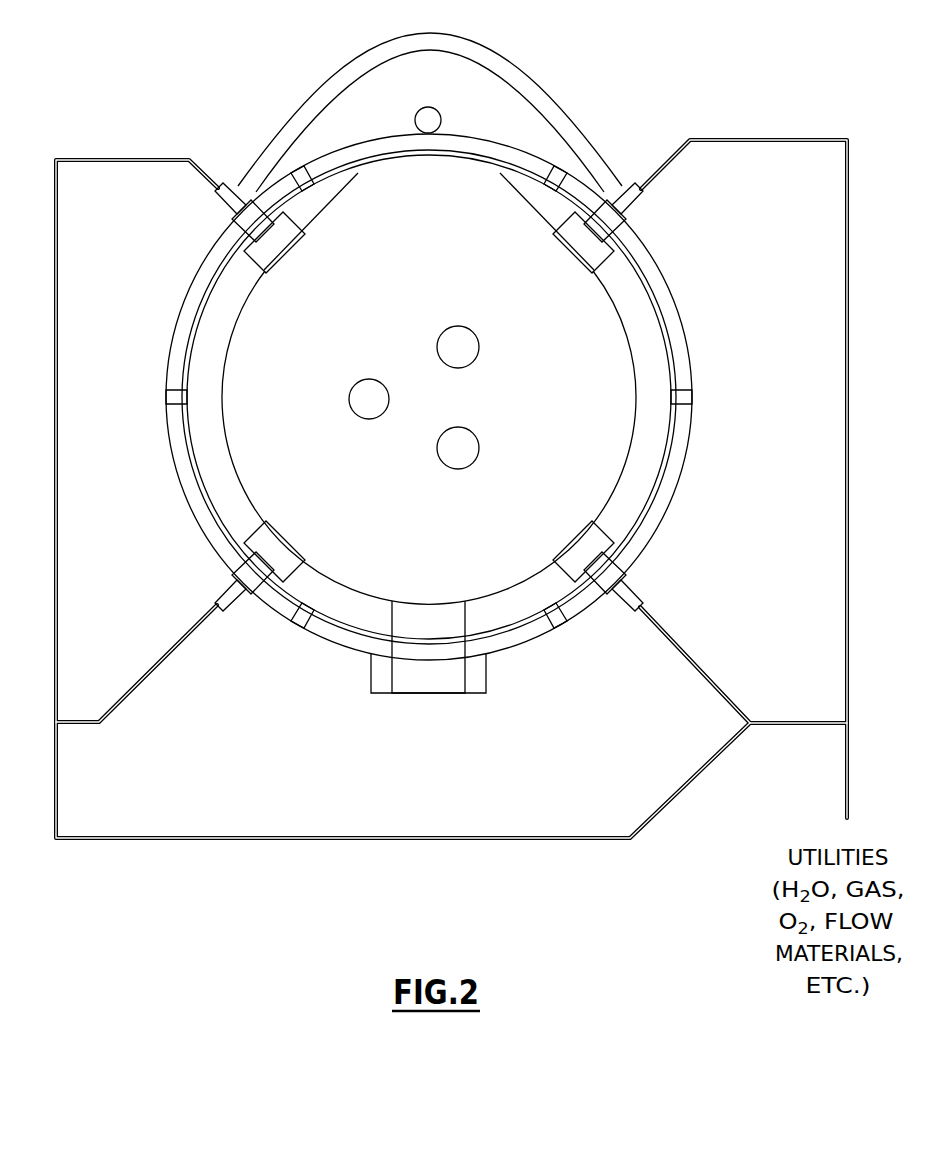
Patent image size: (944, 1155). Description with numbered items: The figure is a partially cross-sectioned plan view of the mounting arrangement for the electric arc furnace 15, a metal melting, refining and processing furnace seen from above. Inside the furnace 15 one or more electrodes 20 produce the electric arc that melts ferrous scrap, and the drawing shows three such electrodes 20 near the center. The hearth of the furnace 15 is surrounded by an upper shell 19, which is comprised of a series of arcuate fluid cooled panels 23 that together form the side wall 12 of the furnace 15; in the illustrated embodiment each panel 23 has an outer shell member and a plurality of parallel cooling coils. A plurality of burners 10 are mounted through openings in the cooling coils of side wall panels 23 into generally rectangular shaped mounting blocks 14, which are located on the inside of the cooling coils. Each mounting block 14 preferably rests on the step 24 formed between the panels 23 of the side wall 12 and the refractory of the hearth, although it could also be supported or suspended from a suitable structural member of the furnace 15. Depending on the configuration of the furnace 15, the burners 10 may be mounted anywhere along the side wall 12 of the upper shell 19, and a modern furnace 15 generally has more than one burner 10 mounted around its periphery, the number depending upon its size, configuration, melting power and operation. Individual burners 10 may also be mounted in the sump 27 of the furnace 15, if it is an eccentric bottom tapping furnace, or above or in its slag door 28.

The burner 10 is at (238, 184).
The side wall 12 is at (195, 400).
The mounting block 14 is at (276, 222).
The electric arc furnace 15 is at (780, 379).
The upper shell 19 is at (184, 288).
The electrode 20 is at (461, 369).
The fluid cooled panel 23 is at (512, 158).
The step 24 is at (640, 350).
The sump 27 is at (468, 85).
The slag door 28 is at (425, 694).